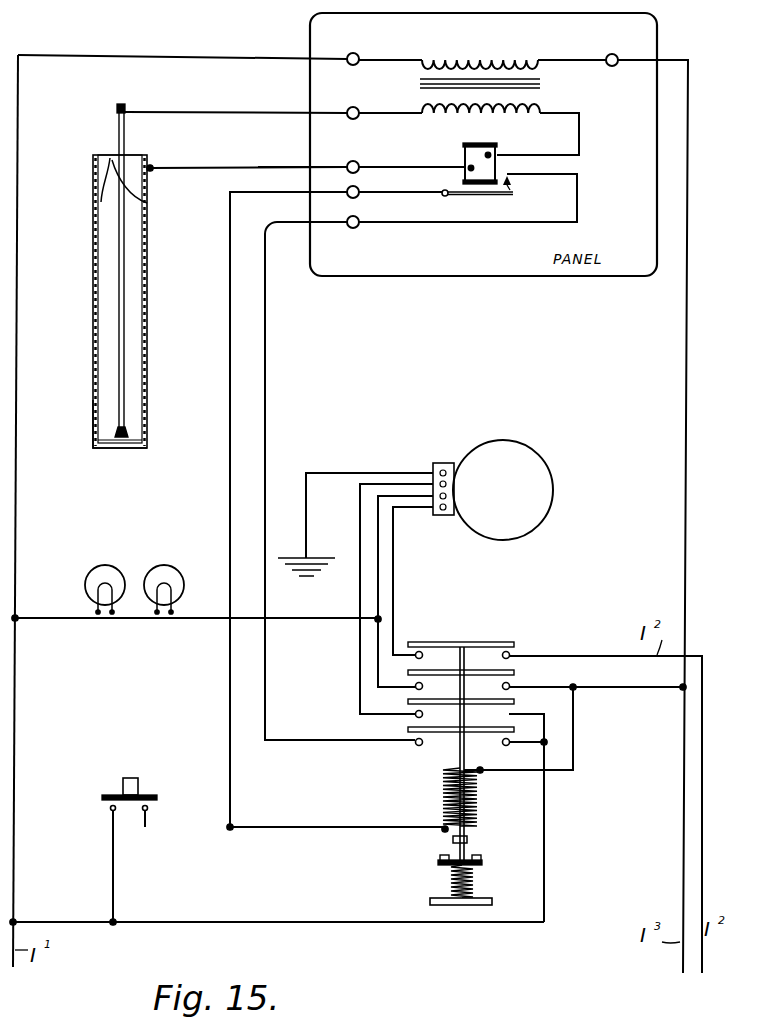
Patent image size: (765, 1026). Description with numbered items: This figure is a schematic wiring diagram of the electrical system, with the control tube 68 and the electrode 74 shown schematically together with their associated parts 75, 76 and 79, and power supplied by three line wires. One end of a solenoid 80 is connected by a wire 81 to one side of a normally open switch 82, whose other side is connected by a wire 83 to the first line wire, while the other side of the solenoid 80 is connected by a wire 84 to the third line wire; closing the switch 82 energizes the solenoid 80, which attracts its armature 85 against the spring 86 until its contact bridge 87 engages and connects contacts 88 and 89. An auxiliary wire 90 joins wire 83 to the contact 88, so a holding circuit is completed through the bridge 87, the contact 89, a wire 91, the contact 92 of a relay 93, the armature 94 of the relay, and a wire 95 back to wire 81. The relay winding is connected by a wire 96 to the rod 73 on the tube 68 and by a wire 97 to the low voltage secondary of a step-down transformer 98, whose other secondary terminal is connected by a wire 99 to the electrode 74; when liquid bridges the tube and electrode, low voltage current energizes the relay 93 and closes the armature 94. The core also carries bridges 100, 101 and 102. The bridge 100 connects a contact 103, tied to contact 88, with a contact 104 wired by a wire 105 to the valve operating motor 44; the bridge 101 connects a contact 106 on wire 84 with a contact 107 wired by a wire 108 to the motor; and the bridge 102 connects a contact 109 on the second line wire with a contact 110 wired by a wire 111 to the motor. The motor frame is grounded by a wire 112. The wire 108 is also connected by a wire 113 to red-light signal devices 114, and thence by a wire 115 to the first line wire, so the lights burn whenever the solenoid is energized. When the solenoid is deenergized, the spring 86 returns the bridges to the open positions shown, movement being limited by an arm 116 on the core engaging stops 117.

The valve operating motor 44 is at (552, 478).
The control tube 68 is at (148, 304).
The rod 73 is at (153, 165).
The electrode 74 is at (122, 372).
The wire 75 is at (112, 160).
The tube wall 76 is at (94, 413).
The tube bottom 79 is at (122, 450).
The solenoid 80 is at (443, 791).
The wire 81 is at (291, 825).
The normally open switch 82 is at (135, 776).
The wire 83 is at (88, 914).
The wire 84 is at (573, 718).
The armature 85 is at (467, 836).
The spring 86 is at (472, 884).
The contact bridge 87 is at (448, 738).
The contact 88 is at (506, 746).
The contact 89 is at (415, 745).
The auxiliary wire 90 is at (338, 937).
The wire 91 is at (270, 673).
The contact 92 is at (515, 186).
The relay 93 is at (482, 144).
The armature 94 is at (478, 205).
The wire 95 is at (382, 205).
The wire 96 is at (259, 166).
The wire 97 is at (582, 134).
The step-down transformer 98 is at (540, 90).
The wire 99 is at (260, 111).
The bridge 100 is at (490, 692).
The bridge 101 is at (494, 665).
The bridge 102 is at (494, 642).
The contact 103 is at (511, 714).
The contact 104 is at (433, 716).
The wire 105 is at (360, 672).
The contact 106 is at (511, 687).
The contact 107 is at (433, 688).
The wire 108 is at (380, 573).
The contact 109 is at (511, 656).
The contact 110 is at (433, 657).
The wire 111 is at (397, 543).
The wire 112 is at (350, 468).
The wire 113 is at (288, 618).
The signal devices 114 is at (128, 598).
The wire 115 is at (65, 611).
The arm 116 is at (440, 866).
The stops 117 is at (438, 857).